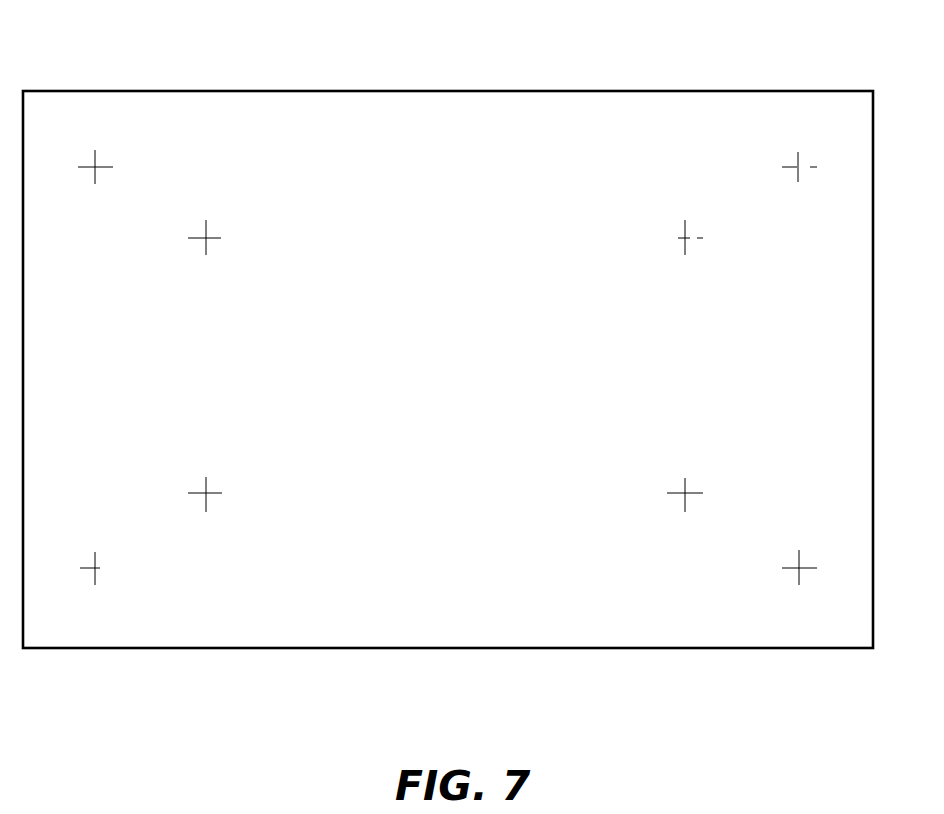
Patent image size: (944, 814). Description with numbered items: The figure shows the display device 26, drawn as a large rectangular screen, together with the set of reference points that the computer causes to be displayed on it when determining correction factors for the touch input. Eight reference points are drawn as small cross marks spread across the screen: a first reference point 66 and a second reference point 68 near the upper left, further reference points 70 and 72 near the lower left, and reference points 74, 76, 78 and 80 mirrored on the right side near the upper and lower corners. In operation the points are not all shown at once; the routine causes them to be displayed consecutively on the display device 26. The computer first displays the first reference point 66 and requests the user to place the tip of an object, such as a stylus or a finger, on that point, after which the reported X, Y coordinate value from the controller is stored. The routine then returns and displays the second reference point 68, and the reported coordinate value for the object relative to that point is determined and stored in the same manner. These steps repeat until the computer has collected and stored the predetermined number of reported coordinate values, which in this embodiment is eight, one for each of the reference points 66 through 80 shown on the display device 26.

The display device 26 is at (481, 91).
The first reference point 66 is at (107, 167).
The second reference point 68 is at (217, 238).
The reference point 70 is at (216, 493).
The reference point 72 is at (105, 568).
The reference point 74 is at (792, 167).
The reference point 76 is at (680, 238).
The reference point 78 is at (677, 493).
The reference point 80 is at (792, 567).